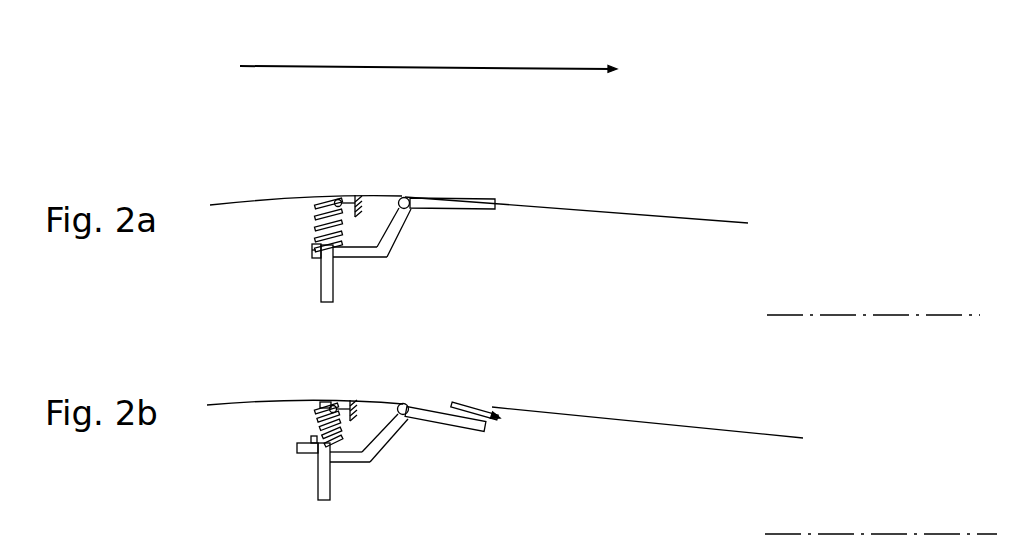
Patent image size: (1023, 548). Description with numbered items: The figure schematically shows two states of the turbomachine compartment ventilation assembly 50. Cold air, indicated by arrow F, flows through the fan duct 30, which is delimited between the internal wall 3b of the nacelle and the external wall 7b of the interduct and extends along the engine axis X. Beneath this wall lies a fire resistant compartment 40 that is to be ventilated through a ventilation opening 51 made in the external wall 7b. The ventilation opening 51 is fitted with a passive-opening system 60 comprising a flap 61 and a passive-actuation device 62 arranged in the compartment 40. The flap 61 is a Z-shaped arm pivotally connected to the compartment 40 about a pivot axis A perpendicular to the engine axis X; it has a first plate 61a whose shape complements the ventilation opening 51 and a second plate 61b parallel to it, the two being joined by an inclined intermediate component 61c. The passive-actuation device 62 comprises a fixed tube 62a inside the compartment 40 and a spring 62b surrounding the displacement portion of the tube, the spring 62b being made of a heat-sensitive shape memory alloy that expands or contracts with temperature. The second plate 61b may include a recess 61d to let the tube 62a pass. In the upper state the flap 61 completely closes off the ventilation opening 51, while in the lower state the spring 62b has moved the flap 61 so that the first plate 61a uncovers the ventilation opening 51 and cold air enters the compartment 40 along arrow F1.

In FIG. 2A, the fan duct 30 is at (654, 159).
In FIG. 2B, the fan duct 30 is at (648, 369).
In FIG. 2A, the compartment 40 is at (862, 258).
In FIG. 2B, the compartment 40 is at (872, 481).
In FIG. 2A, the ventilation assembly 50 is at (294, 164).
In FIG. 2B, the ventilation assembly 50 is at (291, 381).
In FIG. 2A, the ventilation opening 51 is at (458, 197).
In FIG. 2B, the ventilation opening 51 is at (444, 402).
In FIG. 2A, the passive-opening system 60 is at (384, 234).
In FIG. 2B, the passive-opening system 60 is at (364, 432).
In FIG. 2A, the flap 61 is at (384, 224).
In FIG. 2B, the flap 61 is at (430, 433).
In FIG. 2A, the first plate 61a is at (481, 200).
In FIG. 2B, the first plate 61a is at (466, 430).
In FIG. 2A, the second plate 61b is at (372, 259).
In FIG. 2B, the second plate 61b is at (352, 463).
In FIG. 2A, the intermediate component 61c is at (388, 236).
In FIG. 2B, the intermediate component 61c is at (388, 441).
In FIG. 2A, the recess 61d is at (312, 255).
In FIG. 2B, the recess 61d is at (307, 444).
In FIG. 2A, the passive-actuation device 62 is at (283, 263).
In FIG. 2B, the passive-actuation device 62 is at (261, 451).
In FIG. 2A, the fixed tube 62a is at (320, 280).
In FIG. 2B, the fixed tube 62a is at (317, 485).
In FIG. 2A, the spring 62b is at (313, 222).
In FIG. 2B, the spring 62b is at (312, 422).
In FIG. 2A, the external wall of the interduct 7b is at (654, 159).
In FIG. 2B, the external wall of the interduct 7b is at (648, 369).
In FIG. 2A, the internal wall of the nacelle 3b is at (722, 220).
In FIG. 2B, the internal wall of the nacelle 3b is at (712, 427).
In FIG. 2A, the pivot axis A is at (400, 197).
In FIG. 2B, the pivot axis A is at (400, 403).
In FIG. 2A, the engine axis X is at (782, 314).
In FIG. 2B, the engine axis X is at (780, 533).
In FIG. 2A, the cold air flow F is at (510, 68).
In FIG. 2B, the cold air entry F1 is at (480, 401).